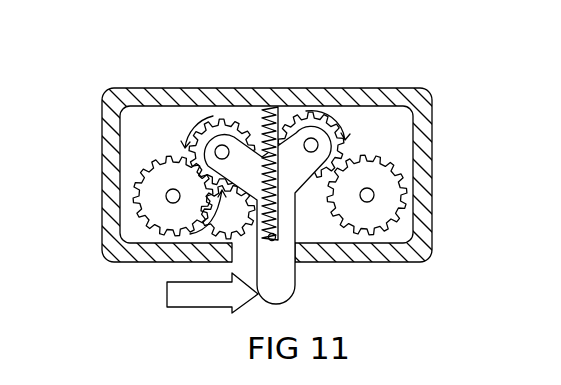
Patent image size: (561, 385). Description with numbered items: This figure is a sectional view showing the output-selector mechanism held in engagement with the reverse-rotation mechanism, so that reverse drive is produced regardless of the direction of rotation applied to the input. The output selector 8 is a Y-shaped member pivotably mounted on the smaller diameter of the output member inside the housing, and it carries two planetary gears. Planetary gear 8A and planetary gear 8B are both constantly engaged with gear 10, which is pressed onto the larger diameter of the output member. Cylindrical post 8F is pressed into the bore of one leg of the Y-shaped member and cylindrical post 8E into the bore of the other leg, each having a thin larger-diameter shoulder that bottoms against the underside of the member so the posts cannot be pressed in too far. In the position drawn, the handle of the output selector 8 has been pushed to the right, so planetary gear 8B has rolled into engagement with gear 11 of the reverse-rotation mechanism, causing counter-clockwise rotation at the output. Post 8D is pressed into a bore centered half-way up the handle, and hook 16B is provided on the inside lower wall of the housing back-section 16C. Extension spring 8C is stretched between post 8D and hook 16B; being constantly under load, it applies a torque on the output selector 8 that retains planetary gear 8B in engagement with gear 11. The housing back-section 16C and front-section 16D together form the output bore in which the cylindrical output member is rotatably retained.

The output selector 8 is at (276, 284).
The planetary gear 8A is at (308, 138).
The planetary gear 8B is at (215, 155).
The extension spring 8C is at (257, 107).
The post 8D is at (295, 254).
The cylindrical post 8E is at (218, 160).
The cylindrical post 8F is at (307, 111).
The gear 10 is at (223, 218).
The gear 11 is at (160, 215).
The hook 16B is at (257, 107).
The housing back-section 16C is at (418, 150).
The housing front-section 16D is at (418, 208).